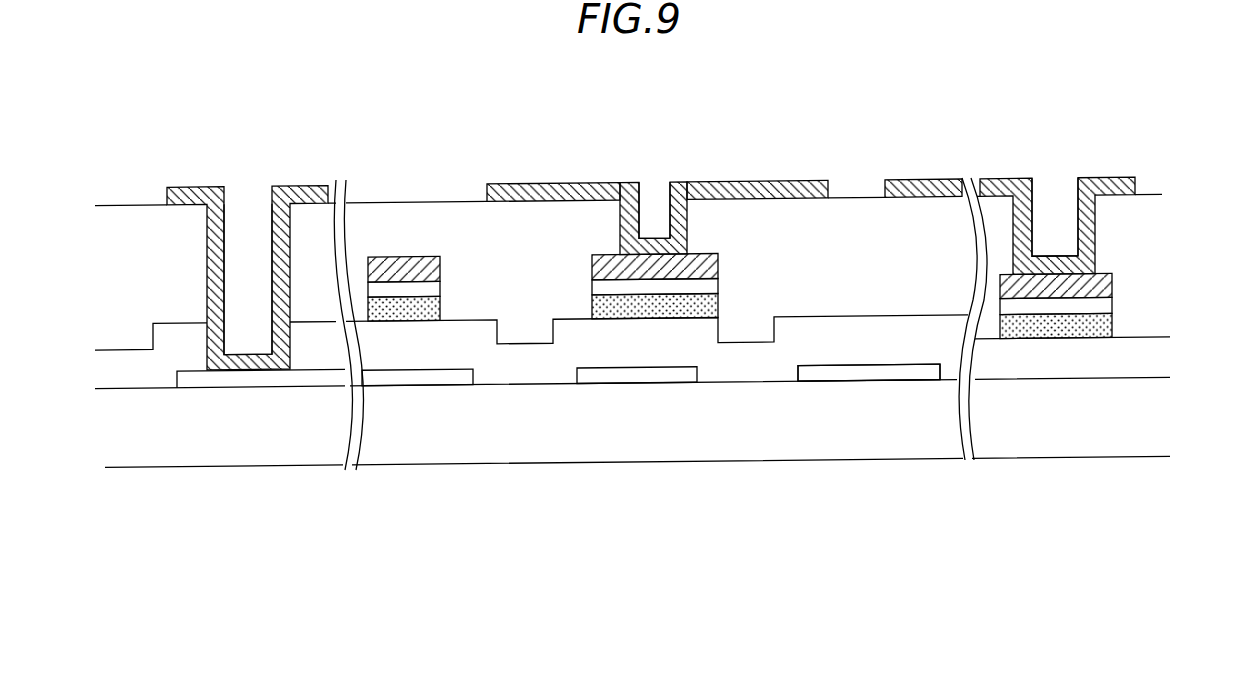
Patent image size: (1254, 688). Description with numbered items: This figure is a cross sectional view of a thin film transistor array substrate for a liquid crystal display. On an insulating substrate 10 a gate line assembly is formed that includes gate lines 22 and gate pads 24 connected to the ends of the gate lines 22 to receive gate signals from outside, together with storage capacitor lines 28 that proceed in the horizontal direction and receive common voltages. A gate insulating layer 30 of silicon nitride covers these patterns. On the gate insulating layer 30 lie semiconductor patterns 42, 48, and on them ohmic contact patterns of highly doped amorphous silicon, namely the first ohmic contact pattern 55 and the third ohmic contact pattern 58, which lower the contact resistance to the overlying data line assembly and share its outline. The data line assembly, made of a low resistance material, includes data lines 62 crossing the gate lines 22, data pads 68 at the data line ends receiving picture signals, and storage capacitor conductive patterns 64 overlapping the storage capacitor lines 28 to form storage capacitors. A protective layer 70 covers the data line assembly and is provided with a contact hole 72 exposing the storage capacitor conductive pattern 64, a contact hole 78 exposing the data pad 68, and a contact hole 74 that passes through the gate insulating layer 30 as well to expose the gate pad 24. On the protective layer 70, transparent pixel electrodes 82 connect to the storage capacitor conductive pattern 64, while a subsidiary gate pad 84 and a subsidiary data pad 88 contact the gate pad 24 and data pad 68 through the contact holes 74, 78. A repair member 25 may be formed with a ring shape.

The insulating substrate 10 is at (180, 453).
The gate line 22 is at (465, 375).
The gate pad 24 is at (273, 375).
The repair member 25 is at (820, 368).
The storage capacitor line 28 is at (675, 375).
The gate insulating layer 30 is at (133, 373).
The semiconductor pattern 42 is at (398, 305).
The semiconductor pattern 48 is at (640, 318).
The first ohmic contact pattern 55 is at (392, 290).
The third ohmic contact pattern 58 is at (612, 290).
The data line 62 is at (430, 268).
The storage capacitor conductive pattern 64 is at (702, 268).
The data pad 68 is at (1092, 283).
The protective layer 70 is at (123, 208).
The contact hole 72 is at (653, 185).
The contact hole 74 is at (253, 235).
The contact hole 78 is at (1055, 183).
The pixel electrode 82 is at (500, 185).
The subsidiary gate pad 84 is at (196, 205).
The subsidiary data pad 88 is at (1096, 185).